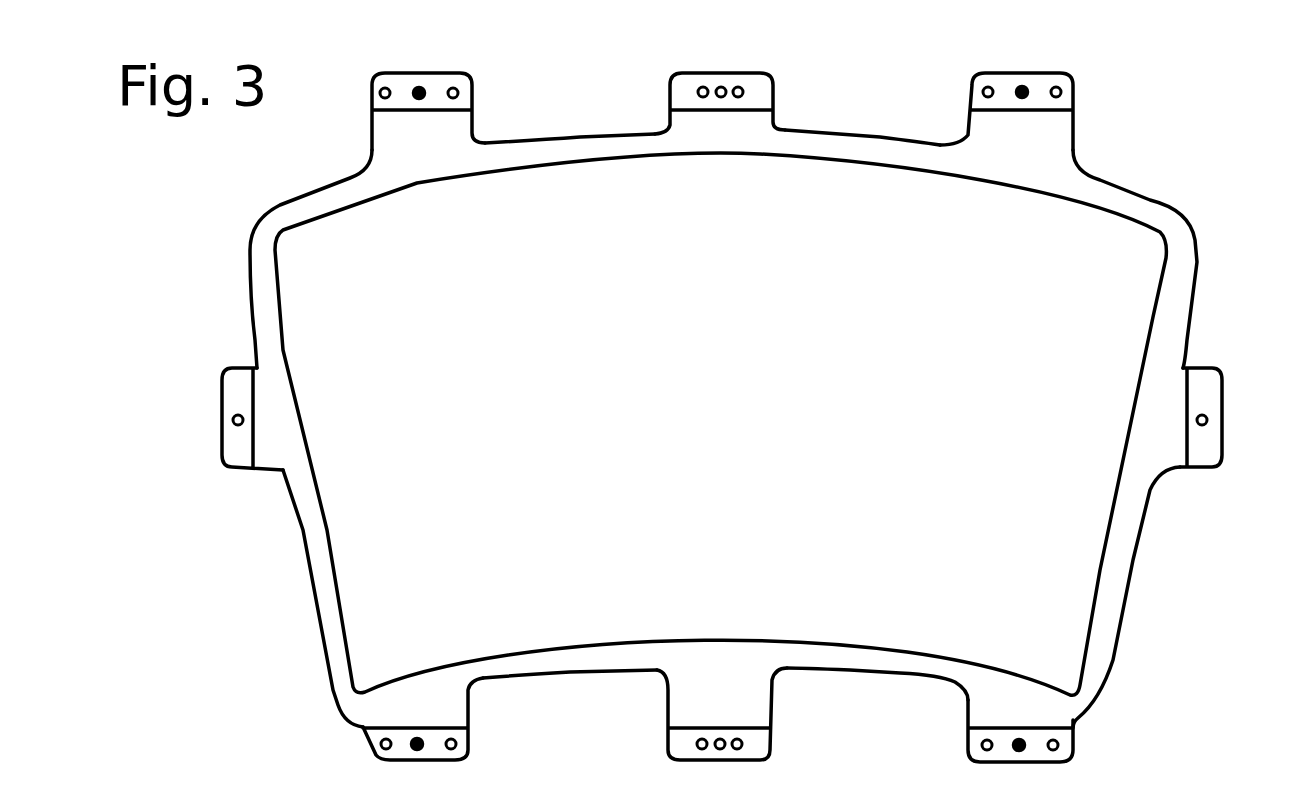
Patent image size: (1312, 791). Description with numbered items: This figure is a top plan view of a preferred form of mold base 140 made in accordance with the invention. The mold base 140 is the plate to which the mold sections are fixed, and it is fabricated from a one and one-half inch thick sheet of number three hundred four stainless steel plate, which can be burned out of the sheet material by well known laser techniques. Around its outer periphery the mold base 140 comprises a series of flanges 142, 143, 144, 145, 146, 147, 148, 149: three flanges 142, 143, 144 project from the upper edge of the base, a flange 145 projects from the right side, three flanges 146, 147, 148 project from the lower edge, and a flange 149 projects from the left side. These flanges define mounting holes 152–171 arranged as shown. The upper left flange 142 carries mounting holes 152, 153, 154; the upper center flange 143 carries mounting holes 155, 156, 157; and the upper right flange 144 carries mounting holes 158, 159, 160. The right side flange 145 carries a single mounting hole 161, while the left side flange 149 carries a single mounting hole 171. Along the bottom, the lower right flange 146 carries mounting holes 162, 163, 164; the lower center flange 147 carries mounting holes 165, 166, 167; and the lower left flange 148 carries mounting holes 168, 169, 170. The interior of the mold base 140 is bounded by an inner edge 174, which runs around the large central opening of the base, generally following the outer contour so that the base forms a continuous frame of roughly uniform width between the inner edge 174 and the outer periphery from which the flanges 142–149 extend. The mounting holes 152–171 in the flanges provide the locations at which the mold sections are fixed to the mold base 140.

The mold base 140 is at (308, 567).
The flange 142 is at (372, 97).
The flange 143 is at (670, 95).
The flange 144 is at (972, 98).
The flange 145 is at (1200, 467).
The flange 146 is at (1075, 747).
The flange 147 is at (773, 743).
The flange 148 is at (470, 748).
The flange 149 is at (233, 368).
The mounting hole 152 is at (385, 88).
The mounting hole 153 is at (419, 90).
The mounting hole 154 is at (457, 90).
The mounting hole 155 is at (703, 88).
The mounting hole 156 is at (721, 88).
The mounting hole 157 is at (742, 90).
The mounting hole 158 is at (988, 88).
The mounting hole 159 is at (1022, 88).
The mounting hole 160 is at (1060, 91).
The mounting hole 161 is at (1203, 415).
The mounting hole 162 is at (1056, 751).
The mounting hole 163 is at (1019, 751).
The mounting hole 164 is at (987, 751).
The mounting hole 165 is at (740, 750).
The mounting hole 166 is at (720, 750).
The mounting hole 167 is at (702, 750).
The mounting hole 168 is at (451, 750).
The mounting hole 169 is at (417, 750).
The mounting hole 170 is at (386, 750).
The mounting hole 171 is at (238, 425).
The inner edge 174 is at (518, 165).